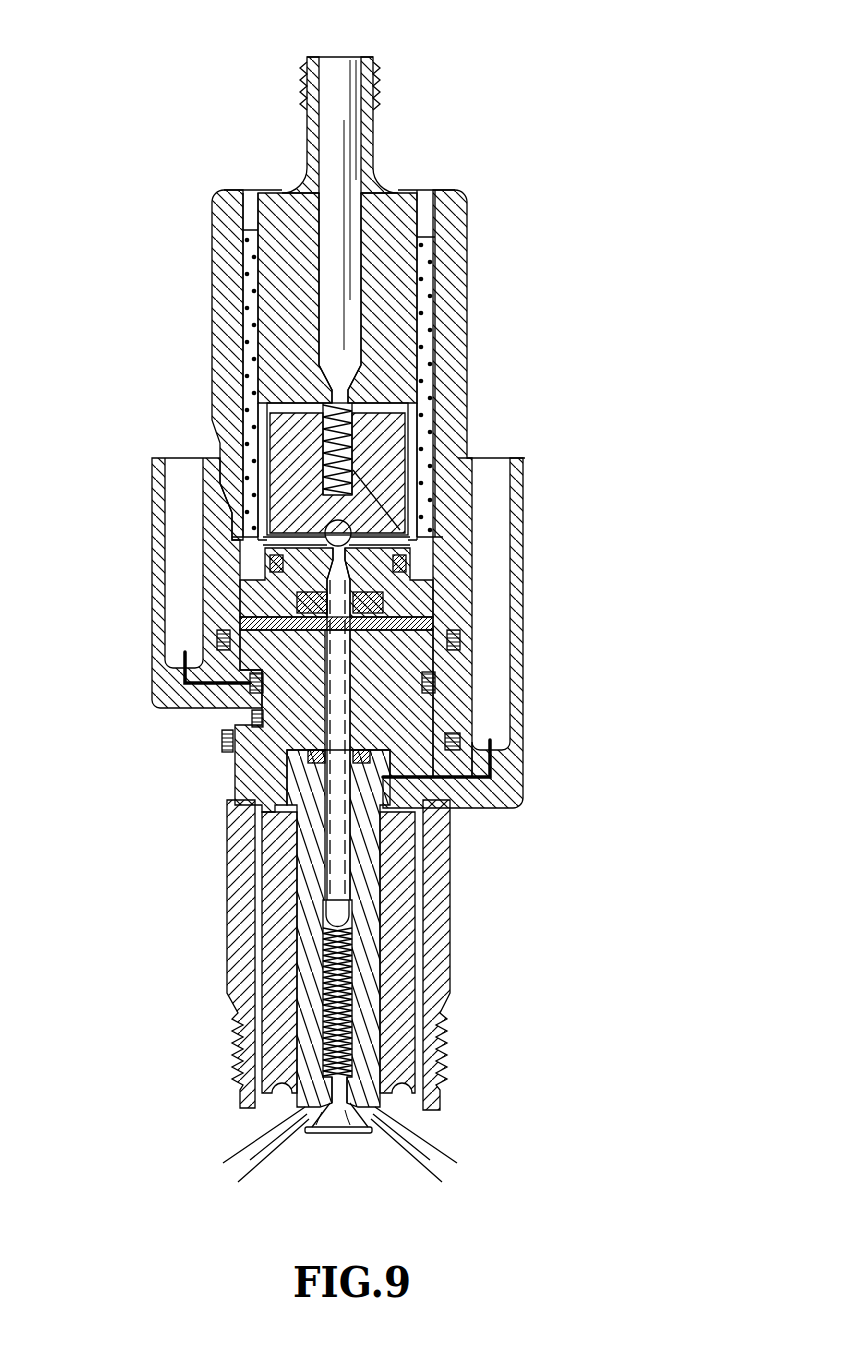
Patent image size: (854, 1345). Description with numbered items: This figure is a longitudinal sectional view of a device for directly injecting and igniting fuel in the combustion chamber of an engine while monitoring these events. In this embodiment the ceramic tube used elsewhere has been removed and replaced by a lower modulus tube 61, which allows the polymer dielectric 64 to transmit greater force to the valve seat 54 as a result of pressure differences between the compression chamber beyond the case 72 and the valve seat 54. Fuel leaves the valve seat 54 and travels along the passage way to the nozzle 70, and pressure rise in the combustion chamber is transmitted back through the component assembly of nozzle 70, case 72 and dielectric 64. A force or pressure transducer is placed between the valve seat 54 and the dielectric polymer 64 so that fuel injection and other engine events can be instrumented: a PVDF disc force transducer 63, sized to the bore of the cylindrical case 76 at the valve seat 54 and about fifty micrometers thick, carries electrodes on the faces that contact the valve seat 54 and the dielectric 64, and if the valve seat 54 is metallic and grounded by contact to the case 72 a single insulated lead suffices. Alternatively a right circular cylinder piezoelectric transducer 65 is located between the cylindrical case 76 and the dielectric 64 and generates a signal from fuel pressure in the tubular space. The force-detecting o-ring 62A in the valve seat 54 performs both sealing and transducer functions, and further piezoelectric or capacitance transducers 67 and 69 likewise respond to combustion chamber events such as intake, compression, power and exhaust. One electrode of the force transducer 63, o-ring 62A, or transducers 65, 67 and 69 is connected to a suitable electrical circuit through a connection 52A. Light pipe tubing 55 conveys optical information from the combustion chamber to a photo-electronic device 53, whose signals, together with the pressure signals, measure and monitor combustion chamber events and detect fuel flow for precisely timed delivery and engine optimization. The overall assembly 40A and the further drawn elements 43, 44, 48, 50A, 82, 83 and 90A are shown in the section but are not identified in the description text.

The spray nozzle assembly 40A is at (343, 622).
The inlet stem 43 is at (402, 192).
The nozzle body 44 is at (467, 212).
The check valve chamber 48 is at (408, 432).
The valve seat 54 is at (420, 548).
The retaining nut 50A is at (185, 465).
The force-detecting o-ring 62A is at (445, 595).
The force transducer 63 is at (440, 622).
The pressure transducer 67 is at (220, 640).
The cylindrical piezoelectric transducer 65 is at (436, 690).
The electrical connection 52A is at (183, 683).
The photo-electronic device 53 is at (255, 720).
The polymer dielectric 64 is at (505, 797).
The pressure transducer 69 is at (228, 748).
The lower modulus tube 61 is at (330, 730).
The nozzle 70 is at (307, 922).
The case 72 is at (405, 915).
The light pipe tubing 55 is at (252, 878).
The cylindrical case 76 is at (446, 968).
The nozzle tip 83 is at (437, 1110).
The spray pattern 90A is at (357, 1097).
The deflector disc 82 is at (336, 1134).